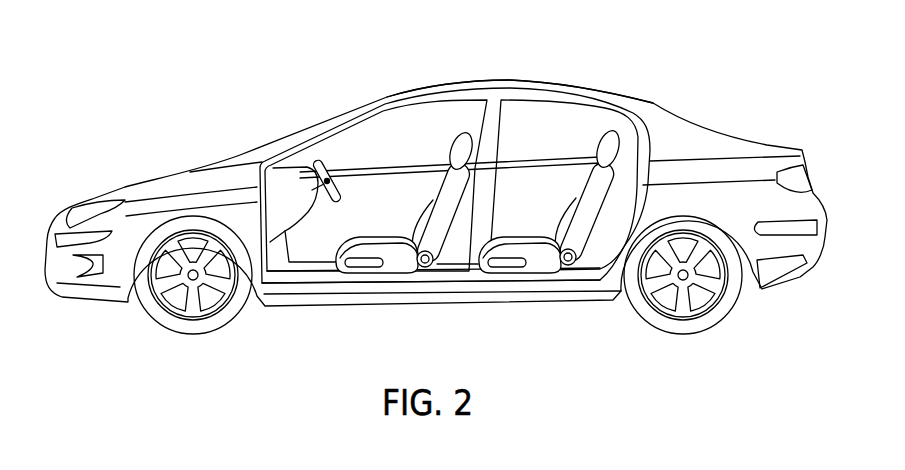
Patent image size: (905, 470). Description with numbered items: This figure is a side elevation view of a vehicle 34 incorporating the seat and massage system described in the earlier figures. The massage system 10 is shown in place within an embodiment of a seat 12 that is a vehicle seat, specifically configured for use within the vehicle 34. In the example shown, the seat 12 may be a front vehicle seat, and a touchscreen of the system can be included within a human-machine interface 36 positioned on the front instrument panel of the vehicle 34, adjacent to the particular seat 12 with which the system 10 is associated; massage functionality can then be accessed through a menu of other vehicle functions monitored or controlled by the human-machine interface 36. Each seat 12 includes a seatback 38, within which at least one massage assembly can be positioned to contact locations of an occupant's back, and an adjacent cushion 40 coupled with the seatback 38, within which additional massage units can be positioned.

The massage system 10 is at (285, 316).
The seat 12 is at (373, 284).
The vehicle 34 is at (533, 53).
The human-machine interface 36 is at (342, 158).
The seatback 38 is at (440, 207).
The cushion 40 is at (380, 250).